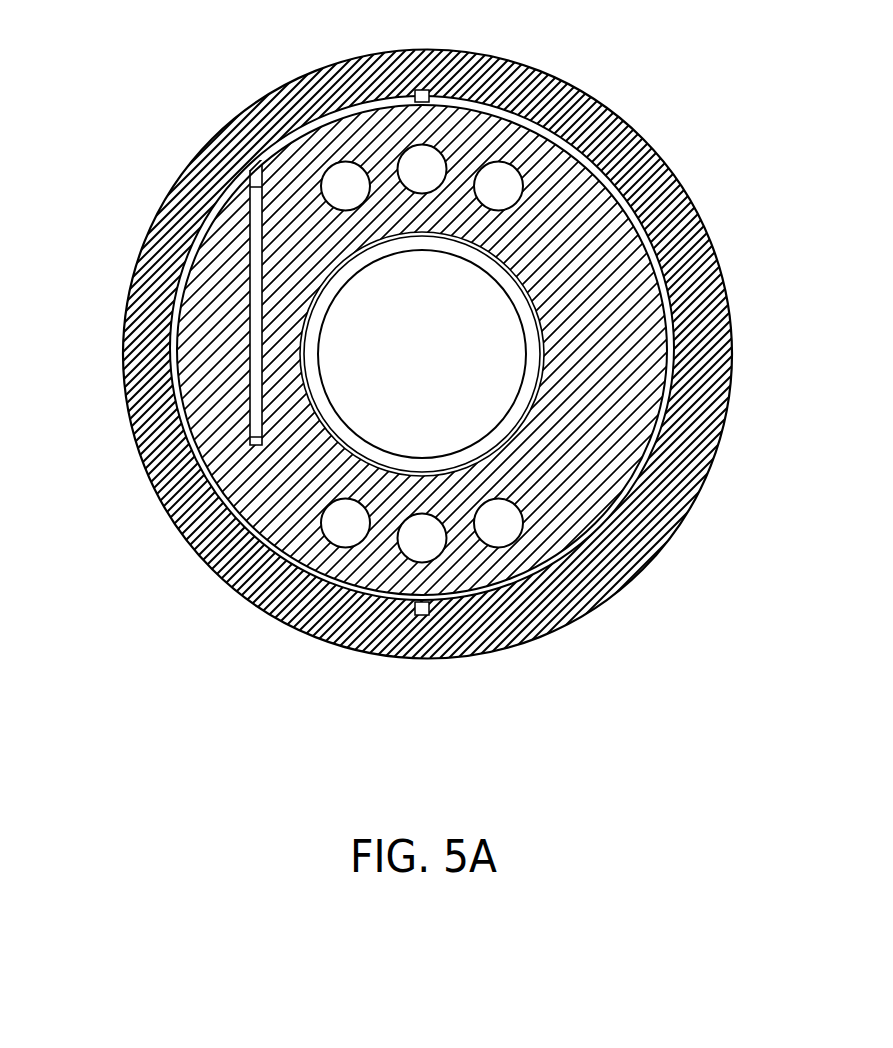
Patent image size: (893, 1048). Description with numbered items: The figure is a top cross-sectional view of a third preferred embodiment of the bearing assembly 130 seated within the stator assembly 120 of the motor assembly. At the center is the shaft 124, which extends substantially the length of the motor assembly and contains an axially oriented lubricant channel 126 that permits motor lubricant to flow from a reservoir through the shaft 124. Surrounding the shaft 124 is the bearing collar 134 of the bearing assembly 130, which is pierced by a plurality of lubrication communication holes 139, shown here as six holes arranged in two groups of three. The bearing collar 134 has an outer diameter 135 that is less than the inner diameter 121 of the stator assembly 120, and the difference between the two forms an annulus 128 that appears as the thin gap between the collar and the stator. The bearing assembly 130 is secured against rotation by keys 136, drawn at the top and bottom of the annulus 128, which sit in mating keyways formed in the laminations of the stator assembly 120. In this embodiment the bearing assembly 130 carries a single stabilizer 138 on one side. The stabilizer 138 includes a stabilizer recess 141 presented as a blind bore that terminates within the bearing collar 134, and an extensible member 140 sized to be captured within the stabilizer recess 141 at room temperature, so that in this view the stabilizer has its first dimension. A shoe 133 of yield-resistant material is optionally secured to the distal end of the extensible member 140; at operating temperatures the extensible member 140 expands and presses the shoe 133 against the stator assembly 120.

The stator assembly 120 is at (148, 191).
The inner diameter 121 is at (185, 460).
The shaft 124 is at (330, 288).
The lubricant channel 126 is at (510, 268).
The annulus 128 is at (210, 490).
The bearing assembly 130 is at (208, 259).
The shoe 133 is at (250, 173).
The bearing collar 134 is at (643, 435).
The outer diameter 135 is at (632, 222).
The key 136 is at (423, 89).
The stabilizer 138 is at (242, 303).
The lubrication communication holes 139 is at (408, 162).
The extensible member 140 is at (257, 378).
The stabilizer recess 141 is at (257, 440).